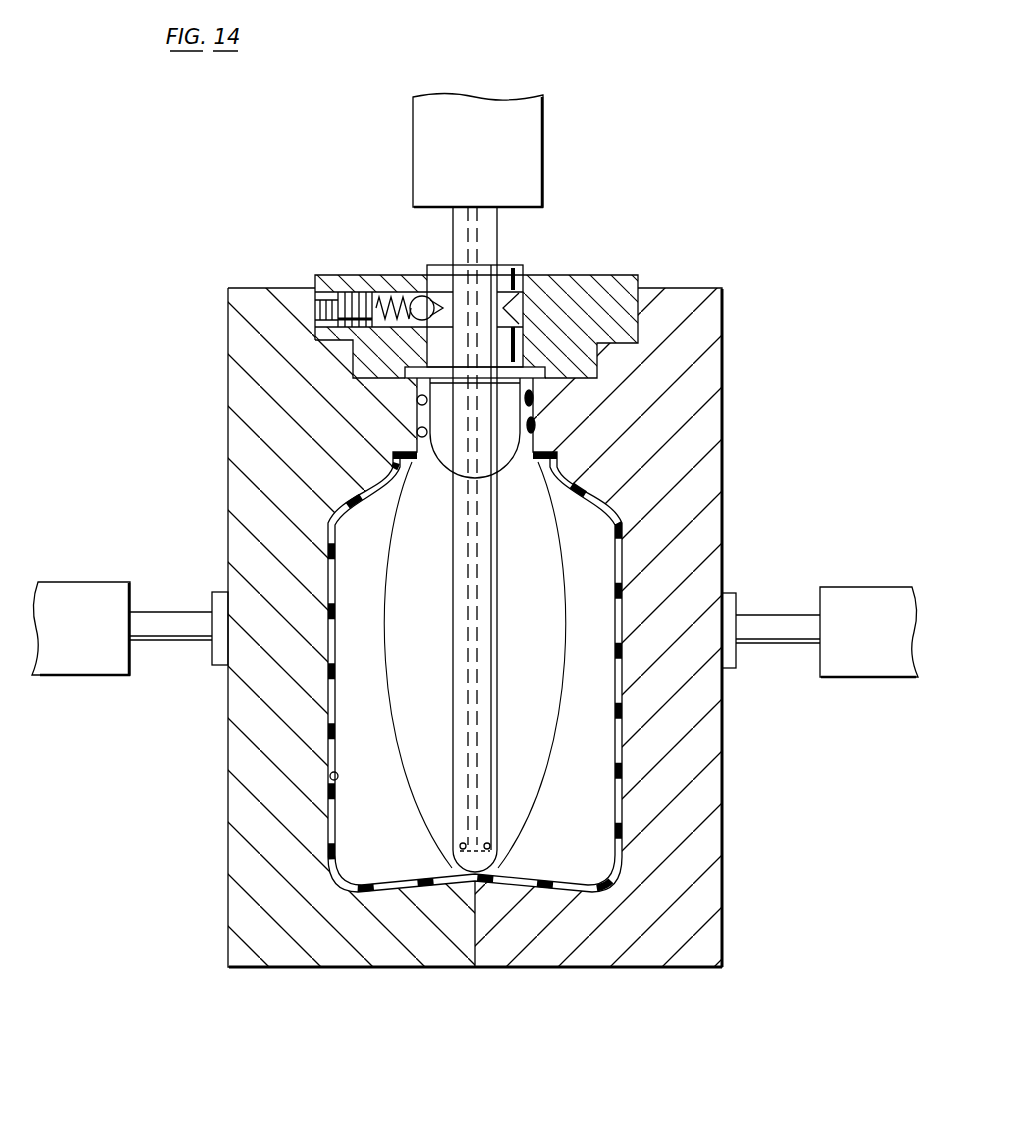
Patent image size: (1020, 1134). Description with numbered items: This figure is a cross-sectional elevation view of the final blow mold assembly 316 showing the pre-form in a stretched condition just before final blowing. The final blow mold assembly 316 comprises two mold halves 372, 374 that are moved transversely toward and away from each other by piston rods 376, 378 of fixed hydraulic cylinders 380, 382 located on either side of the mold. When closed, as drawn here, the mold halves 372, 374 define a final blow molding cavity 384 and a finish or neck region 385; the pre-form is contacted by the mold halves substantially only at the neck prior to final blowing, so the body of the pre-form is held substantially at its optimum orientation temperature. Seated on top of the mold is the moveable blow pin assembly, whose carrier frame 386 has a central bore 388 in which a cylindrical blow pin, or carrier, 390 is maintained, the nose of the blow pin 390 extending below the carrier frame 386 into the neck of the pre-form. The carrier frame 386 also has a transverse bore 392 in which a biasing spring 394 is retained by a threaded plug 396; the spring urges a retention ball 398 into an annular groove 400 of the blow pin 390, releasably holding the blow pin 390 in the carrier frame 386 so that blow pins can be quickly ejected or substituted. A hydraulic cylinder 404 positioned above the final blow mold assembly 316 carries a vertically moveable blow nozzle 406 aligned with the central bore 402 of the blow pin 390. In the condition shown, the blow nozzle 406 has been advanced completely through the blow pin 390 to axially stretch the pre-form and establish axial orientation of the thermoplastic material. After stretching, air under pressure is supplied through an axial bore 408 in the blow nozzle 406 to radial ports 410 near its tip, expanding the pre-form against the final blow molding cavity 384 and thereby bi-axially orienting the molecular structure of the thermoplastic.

The final blow mold assembly 316 is at (734, 1031).
The mold half 372 is at (627, 955).
The mold half 374 is at (343, 952).
The piston rod 376 is at (165, 622).
The piston rod 378 is at (775, 622).
The hydraulic cylinder 380 is at (100, 634).
The hydraulic cylinder 382 is at (852, 639).
The final blow molding cavity 384 is at (330, 773).
The finish or neck region 385 is at (415, 441).
The carrier frame 386 is at (622, 285).
The central bore 388 is at (520, 297).
The blow pin 390 is at (447, 458).
The transverse bore 392 is at (389, 323).
The biasing spring 394 is at (392, 297).
The threaded plug 396 is at (335, 298).
The retention ball 398 is at (422, 296).
The annular groove 400 is at (522, 320).
The central bore 402 is at (465, 262).
The hydraulic cylinder 404 is at (505, 157).
The blow nozzle 406 is at (456, 691).
The axial bore 408 is at (470, 746).
The radial ports 410 is at (452, 845).